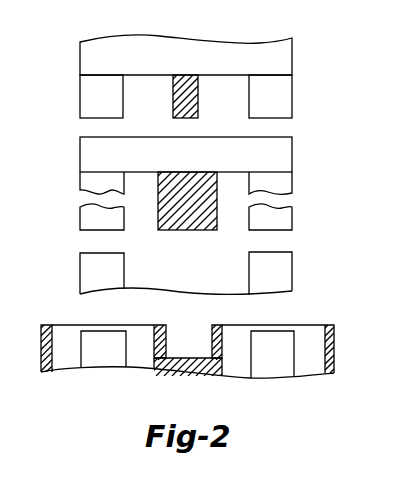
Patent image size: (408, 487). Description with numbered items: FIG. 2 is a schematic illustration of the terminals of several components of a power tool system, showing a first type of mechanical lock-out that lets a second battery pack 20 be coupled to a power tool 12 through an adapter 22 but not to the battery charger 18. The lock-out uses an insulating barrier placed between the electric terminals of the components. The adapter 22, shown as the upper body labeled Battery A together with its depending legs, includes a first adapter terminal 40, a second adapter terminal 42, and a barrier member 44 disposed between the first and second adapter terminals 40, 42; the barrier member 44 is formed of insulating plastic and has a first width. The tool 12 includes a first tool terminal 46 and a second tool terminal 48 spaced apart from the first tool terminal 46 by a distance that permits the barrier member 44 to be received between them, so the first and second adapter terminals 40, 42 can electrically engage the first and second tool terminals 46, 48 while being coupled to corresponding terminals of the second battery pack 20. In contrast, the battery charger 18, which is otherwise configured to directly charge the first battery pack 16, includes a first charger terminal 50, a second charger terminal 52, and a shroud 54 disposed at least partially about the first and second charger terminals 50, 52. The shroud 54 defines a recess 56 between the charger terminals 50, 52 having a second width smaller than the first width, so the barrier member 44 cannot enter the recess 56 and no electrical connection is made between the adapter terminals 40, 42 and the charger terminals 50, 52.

The power tool 12 is at (302, 252).
The first battery pack 16 is at (74, 56).
The battery pack charger 18 is at (342, 338).
The second battery pack 20 is at (80, 143).
The adapter 22 is at (74, 188).
The first adapter terminal 40 is at (81, 223).
The second adapter terminal 42 is at (279, 219).
The barrier member 44 is at (194, 224).
The first tool terminal 46 is at (81, 278).
The second tool terminal 48 is at (278, 268).
The first charger terminal 50 is at (95, 362).
The second charger terminal 52 is at (288, 363).
The shroud 54 is at (216, 356).
The recess 56 is at (187, 343).